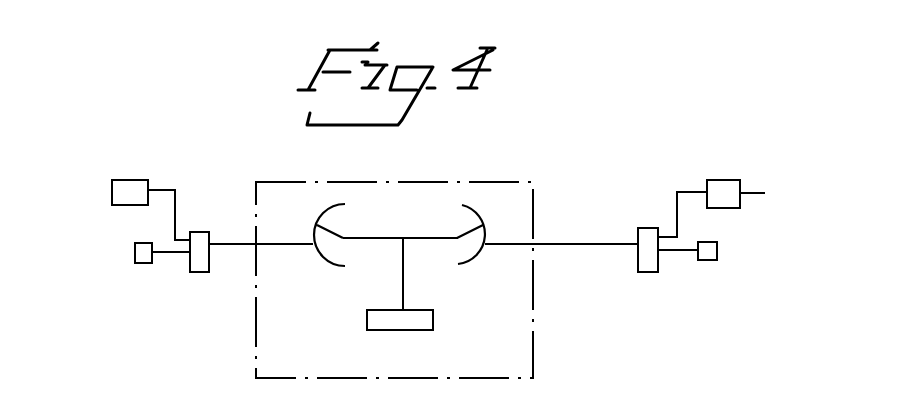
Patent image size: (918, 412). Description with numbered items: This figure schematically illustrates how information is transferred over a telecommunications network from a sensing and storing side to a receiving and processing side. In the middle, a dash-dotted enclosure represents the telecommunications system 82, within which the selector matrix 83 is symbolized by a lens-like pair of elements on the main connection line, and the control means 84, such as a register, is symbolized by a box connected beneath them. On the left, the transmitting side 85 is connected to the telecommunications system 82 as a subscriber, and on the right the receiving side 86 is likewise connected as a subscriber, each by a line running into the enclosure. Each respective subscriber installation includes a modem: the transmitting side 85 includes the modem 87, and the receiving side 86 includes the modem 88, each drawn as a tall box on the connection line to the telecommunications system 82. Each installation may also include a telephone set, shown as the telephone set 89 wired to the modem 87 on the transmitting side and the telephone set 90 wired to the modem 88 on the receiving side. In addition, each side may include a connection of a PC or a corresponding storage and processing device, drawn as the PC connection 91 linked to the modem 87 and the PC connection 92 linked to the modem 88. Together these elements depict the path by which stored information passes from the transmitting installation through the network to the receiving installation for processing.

The telecommunications system 82 is at (470, 195).
The selector matrix 83 is at (356, 203).
The control means 84 is at (433, 320).
The transmitting side 85 is at (168, 273).
The receiving side 86 is at (680, 265).
The modem 87 is at (195, 237).
The modem 88 is at (643, 232).
The telephone set 89 is at (135, 248).
The telephone set 90 is at (717, 248).
The PC connection 91 is at (118, 183).
The PC connection 92 is at (720, 188).